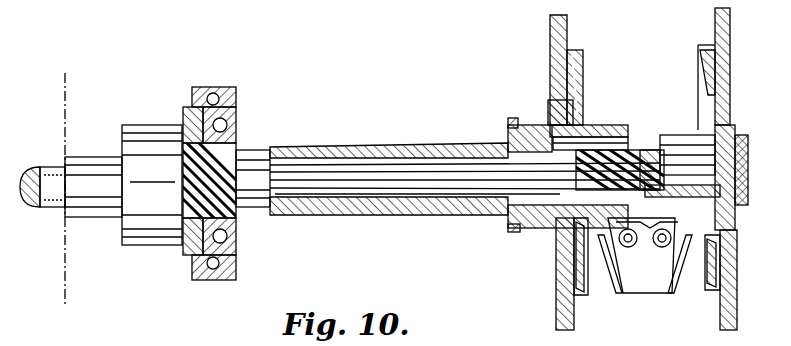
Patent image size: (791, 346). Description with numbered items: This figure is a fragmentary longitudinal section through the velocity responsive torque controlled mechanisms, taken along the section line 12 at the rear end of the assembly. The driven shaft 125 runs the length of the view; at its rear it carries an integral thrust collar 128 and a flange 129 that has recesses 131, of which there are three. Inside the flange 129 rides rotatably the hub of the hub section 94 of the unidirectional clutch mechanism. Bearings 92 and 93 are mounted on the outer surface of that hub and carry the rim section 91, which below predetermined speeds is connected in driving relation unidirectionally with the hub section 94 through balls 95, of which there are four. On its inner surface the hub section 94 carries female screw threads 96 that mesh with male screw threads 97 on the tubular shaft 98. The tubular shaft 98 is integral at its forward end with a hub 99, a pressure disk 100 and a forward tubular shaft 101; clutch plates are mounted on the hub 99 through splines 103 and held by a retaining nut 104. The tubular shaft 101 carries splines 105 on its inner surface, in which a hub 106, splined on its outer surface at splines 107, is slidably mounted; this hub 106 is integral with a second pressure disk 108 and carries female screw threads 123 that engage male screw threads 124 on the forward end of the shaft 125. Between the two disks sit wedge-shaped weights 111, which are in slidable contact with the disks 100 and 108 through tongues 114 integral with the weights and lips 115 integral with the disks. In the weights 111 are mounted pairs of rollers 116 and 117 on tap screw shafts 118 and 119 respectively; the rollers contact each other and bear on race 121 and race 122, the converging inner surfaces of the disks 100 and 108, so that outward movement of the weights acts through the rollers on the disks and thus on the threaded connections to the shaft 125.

The section line 12- 12 is at (30, 95).
The rim section 91 is at (228, 87).
The bearing 92 is at (187, 128).
The bearing 93 is at (237, 122).
The hub section 94 is at (236, 110).
The balls 95 is at (208, 96).
The female screw threads 96 is at (253, 178).
The male screw threads 97 is at (190, 175).
The tubular shaft 98 is at (385, 143).
The hub 99 is at (508, 130).
The disk 100 is at (557, 315).
The tubular shaft 101 is at (593, 128).
The splines 103 is at (548, 120).
The retaining nut 104 is at (506, 228).
The splines 105 is at (628, 150).
The hub 106 is at (662, 140).
The splines 107 is at (748, 135).
The disk 108 is at (728, 25).
The wedge-shaped weights 111 is at (652, 292).
The tongues 114 is at (615, 285).
The lips 115 is at (718, 80).
The rollers 116 is at (672, 236).
The rollers 117 is at (618, 238).
The bolts 118 is at (660, 220).
The bolts 119 is at (648, 245).
The race 121 is at (577, 72).
The race 122 is at (705, 60).
The female screw threads 123 is at (682, 199).
The male screw threads 124 is at (652, 148).
The driven shaft 125 is at (415, 177).
The thrust collar 128 is at (105, 170).
The flange 129 is at (125, 225).
The recesses 131 is at (152, 125).